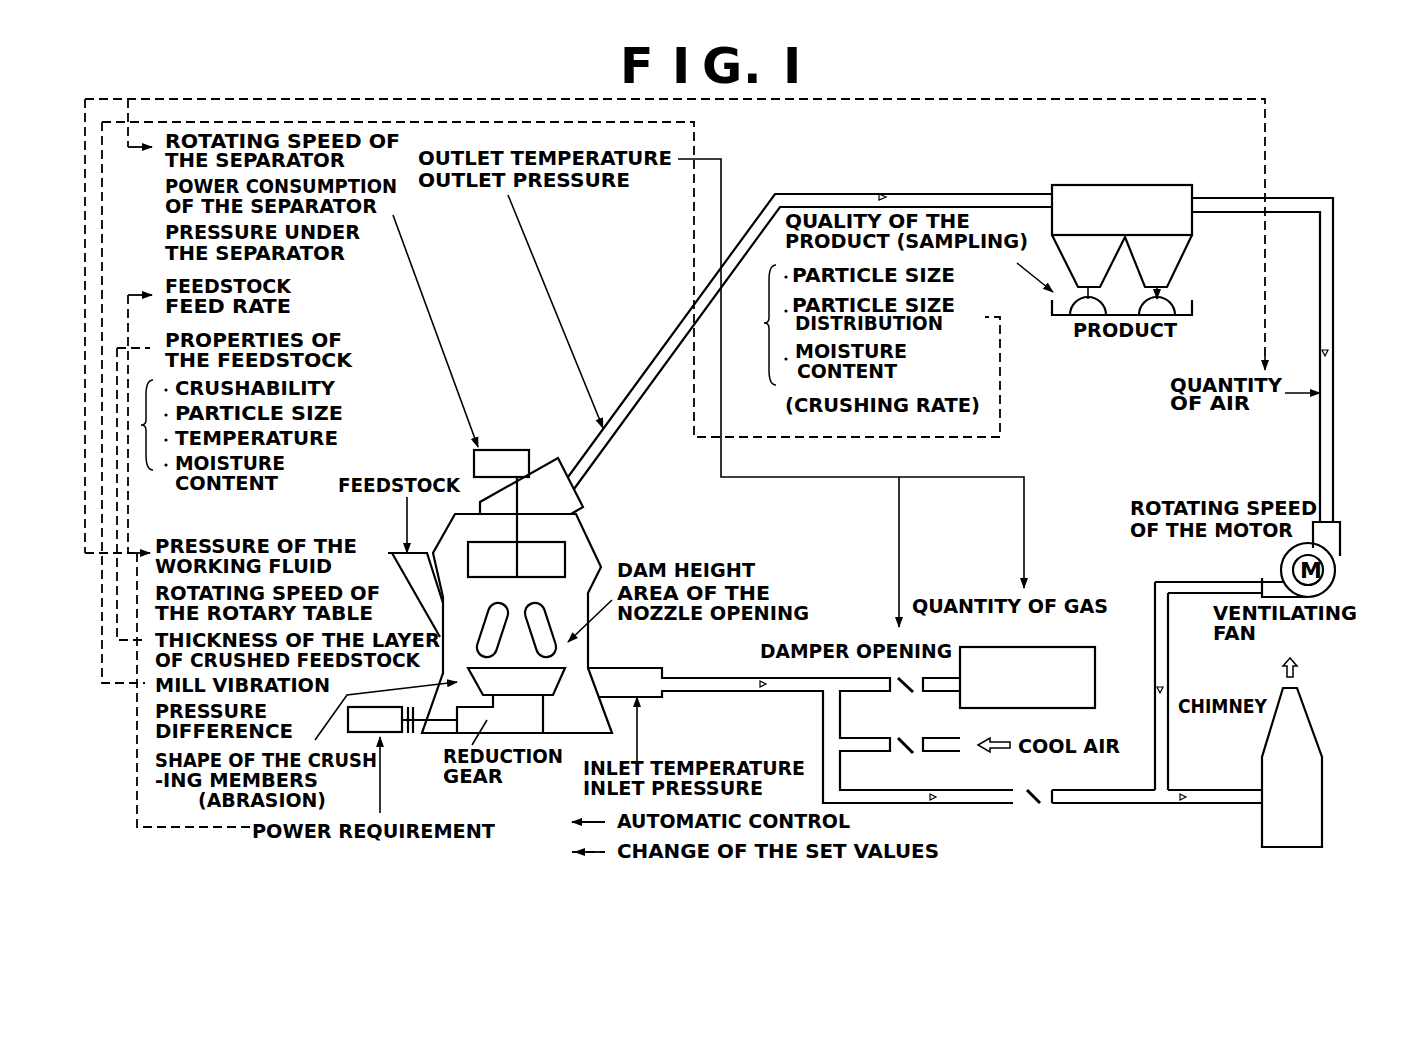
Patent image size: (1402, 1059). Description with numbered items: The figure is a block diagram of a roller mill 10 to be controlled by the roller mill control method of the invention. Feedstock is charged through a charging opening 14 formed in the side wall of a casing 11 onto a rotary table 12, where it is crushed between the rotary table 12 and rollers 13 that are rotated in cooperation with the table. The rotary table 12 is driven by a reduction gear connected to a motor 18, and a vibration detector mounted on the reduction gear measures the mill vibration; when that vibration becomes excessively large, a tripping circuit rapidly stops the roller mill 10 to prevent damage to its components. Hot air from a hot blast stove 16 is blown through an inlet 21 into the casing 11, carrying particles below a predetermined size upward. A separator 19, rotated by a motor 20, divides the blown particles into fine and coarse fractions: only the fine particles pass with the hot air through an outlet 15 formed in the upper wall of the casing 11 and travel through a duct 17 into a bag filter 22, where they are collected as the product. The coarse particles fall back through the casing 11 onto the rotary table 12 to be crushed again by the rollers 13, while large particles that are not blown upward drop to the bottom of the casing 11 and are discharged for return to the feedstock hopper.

The roller mill 10 is at (1283, 172).
The casing 11 is at (583, 532).
The rotary table 12 is at (563, 678).
The rollers 13 is at (537, 606).
The charging opening 14 is at (397, 552).
The outlet 15 is at (557, 457).
The hot blast stove 16 is at (1095, 690).
The duct 17 is at (616, 411).
The motor 18 is at (394, 733).
The separator 19 is at (485, 578).
The motor 20 is at (514, 449).
The inlet 21 is at (662, 668).
The bag filter 22 is at (1137, 185).